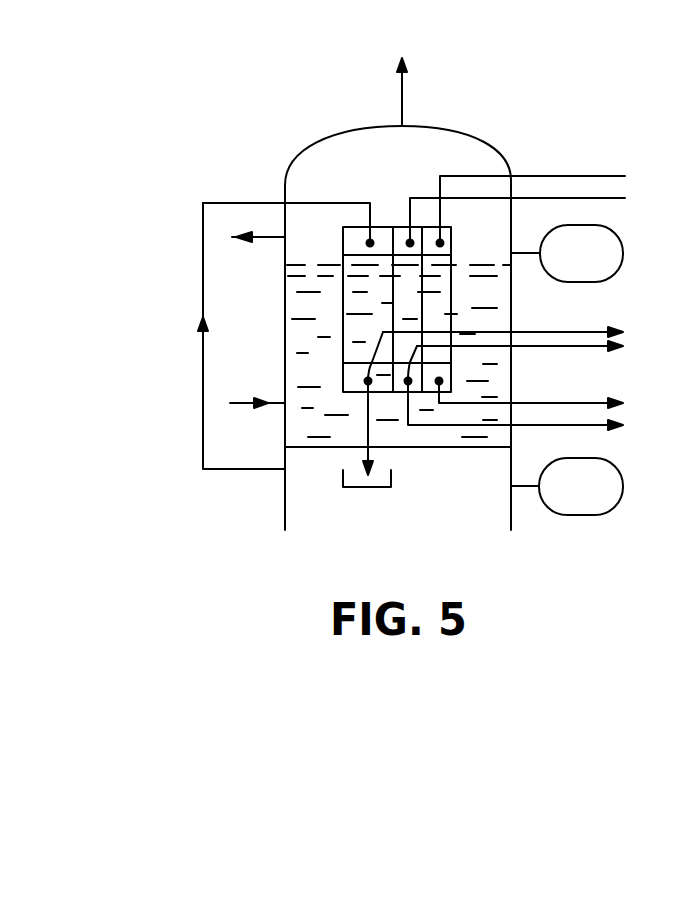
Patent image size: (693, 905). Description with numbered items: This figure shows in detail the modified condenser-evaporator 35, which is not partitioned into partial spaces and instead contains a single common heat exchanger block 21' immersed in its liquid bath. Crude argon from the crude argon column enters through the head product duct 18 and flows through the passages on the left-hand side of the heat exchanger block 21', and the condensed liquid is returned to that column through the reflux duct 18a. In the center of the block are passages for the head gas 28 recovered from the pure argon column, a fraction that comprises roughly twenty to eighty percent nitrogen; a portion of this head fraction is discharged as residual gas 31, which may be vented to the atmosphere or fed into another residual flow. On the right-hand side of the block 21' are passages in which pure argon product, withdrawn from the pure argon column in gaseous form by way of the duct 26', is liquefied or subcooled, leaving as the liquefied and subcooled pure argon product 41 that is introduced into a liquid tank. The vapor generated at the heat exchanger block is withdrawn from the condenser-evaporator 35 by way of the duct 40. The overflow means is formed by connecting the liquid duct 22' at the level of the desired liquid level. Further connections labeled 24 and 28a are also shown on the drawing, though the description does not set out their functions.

The head product duct 18 is at (258, 203).
The reflux duct 18a is at (372, 435).
The common heat exchanger block 21' is at (397, 268).
The liquid duct 22' is at (231, 308).
The signal line 24 is at (604, 329).
The duct 26' is at (531, 177).
The head gas 28 is at (623, 199).
The line 28a is at (603, 428).
The residual gas 31 is at (604, 349).
The condenser-evaporator 35 is at (482, 137).
The duct 40 is at (402, 98).
The liquefied and subcooled pure argon product 41 is at (604, 402).